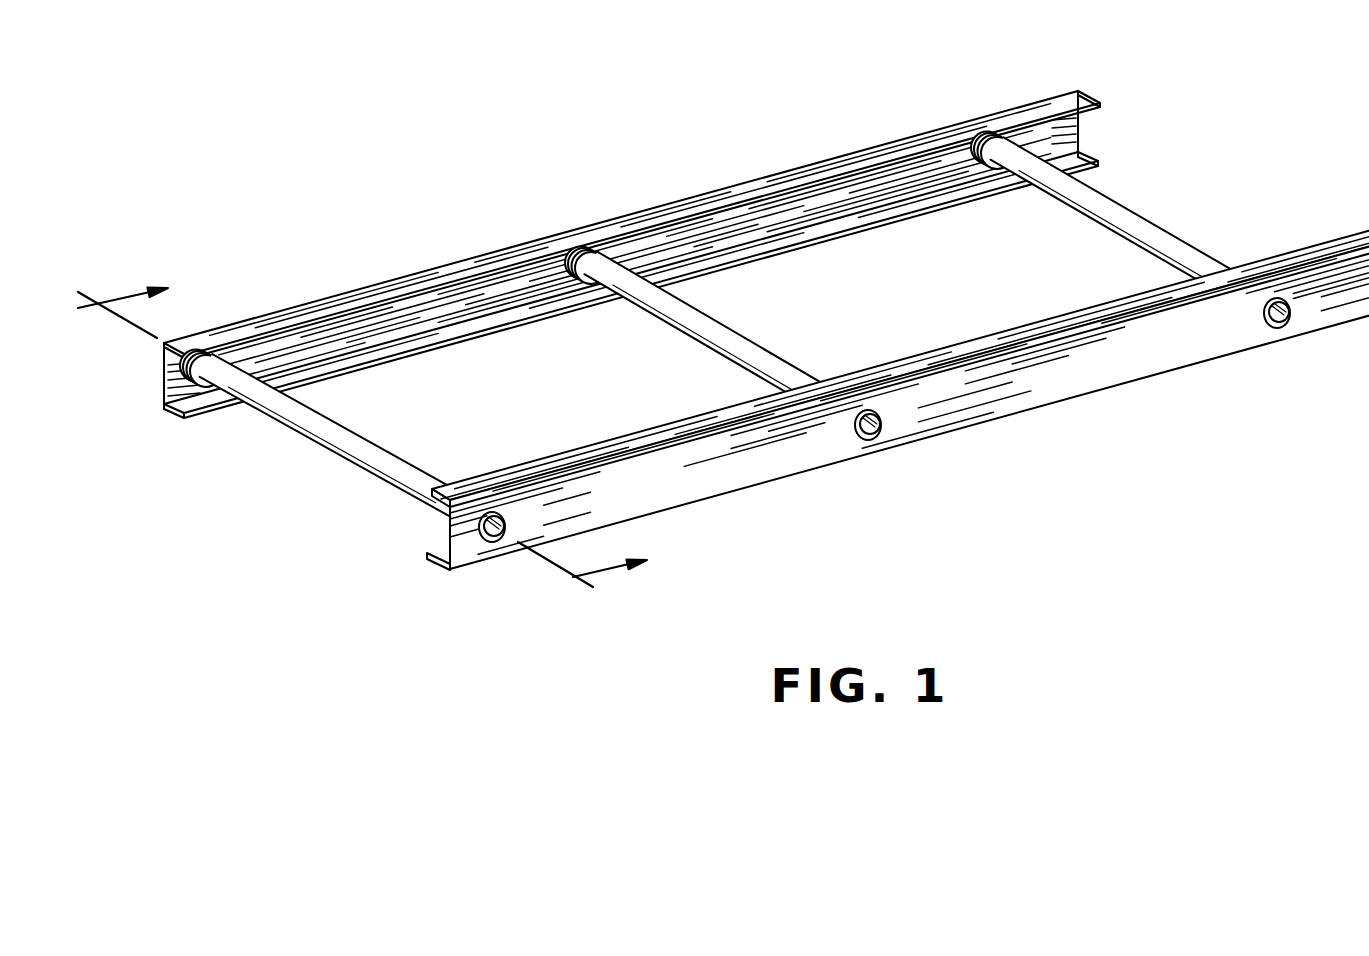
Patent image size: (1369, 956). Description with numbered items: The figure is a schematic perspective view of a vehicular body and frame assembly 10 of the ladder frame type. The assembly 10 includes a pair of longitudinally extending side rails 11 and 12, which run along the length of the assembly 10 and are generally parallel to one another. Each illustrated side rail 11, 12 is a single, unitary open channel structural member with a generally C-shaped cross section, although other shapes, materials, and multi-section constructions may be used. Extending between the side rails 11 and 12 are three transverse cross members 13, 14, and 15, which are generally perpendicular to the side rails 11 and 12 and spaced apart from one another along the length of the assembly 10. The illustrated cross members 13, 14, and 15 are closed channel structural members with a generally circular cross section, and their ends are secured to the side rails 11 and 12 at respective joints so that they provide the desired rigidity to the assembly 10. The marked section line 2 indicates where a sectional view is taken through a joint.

The vehicular body and frame assembly 10 is at (766, 318).
The side rail 11 is at (759, 176).
The side rail 12 is at (1033, 387).
The cross member 13 is at (362, 435).
The cross member 14 is at (733, 331).
The cross member 15 is at (1129, 208).
The section line 2- 2 is at (346, 453).